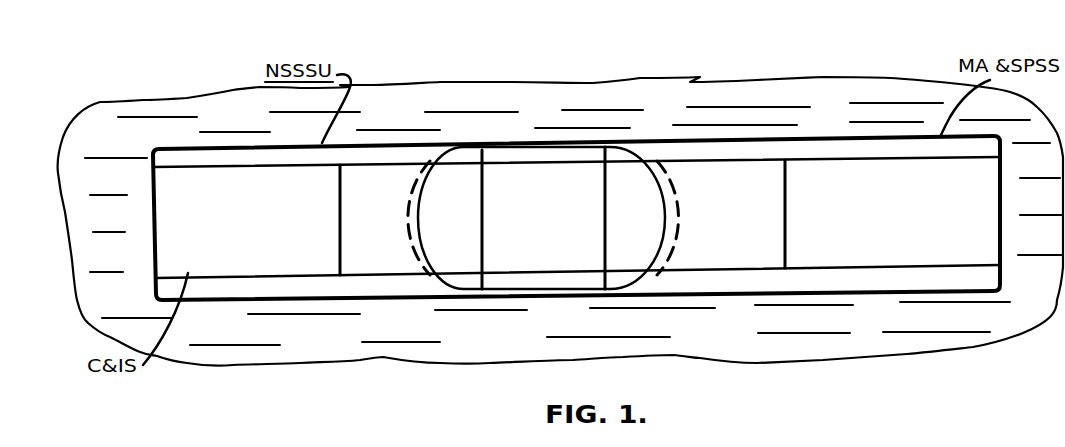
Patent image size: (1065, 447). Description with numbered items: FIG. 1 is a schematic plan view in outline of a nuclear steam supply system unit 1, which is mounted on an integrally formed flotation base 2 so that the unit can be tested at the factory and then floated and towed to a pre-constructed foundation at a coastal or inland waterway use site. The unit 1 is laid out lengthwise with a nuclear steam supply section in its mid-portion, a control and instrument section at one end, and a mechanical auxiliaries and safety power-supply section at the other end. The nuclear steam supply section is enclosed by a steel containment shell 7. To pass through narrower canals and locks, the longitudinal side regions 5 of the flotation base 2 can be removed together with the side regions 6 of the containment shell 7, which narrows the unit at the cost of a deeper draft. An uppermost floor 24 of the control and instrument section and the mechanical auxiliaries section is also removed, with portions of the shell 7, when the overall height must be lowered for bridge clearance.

The reactor containment 1 is at (520, 148).
The flotation base 2 is at (160, 287).
The longitudinal side regions of the flotation base 5 is at (178, 156).
The side regions of the steel containment shell 6 is at (488, 158).
The steel containment shell 7 is at (548, 147).
The uppermost floor 24 is at (366, 173).